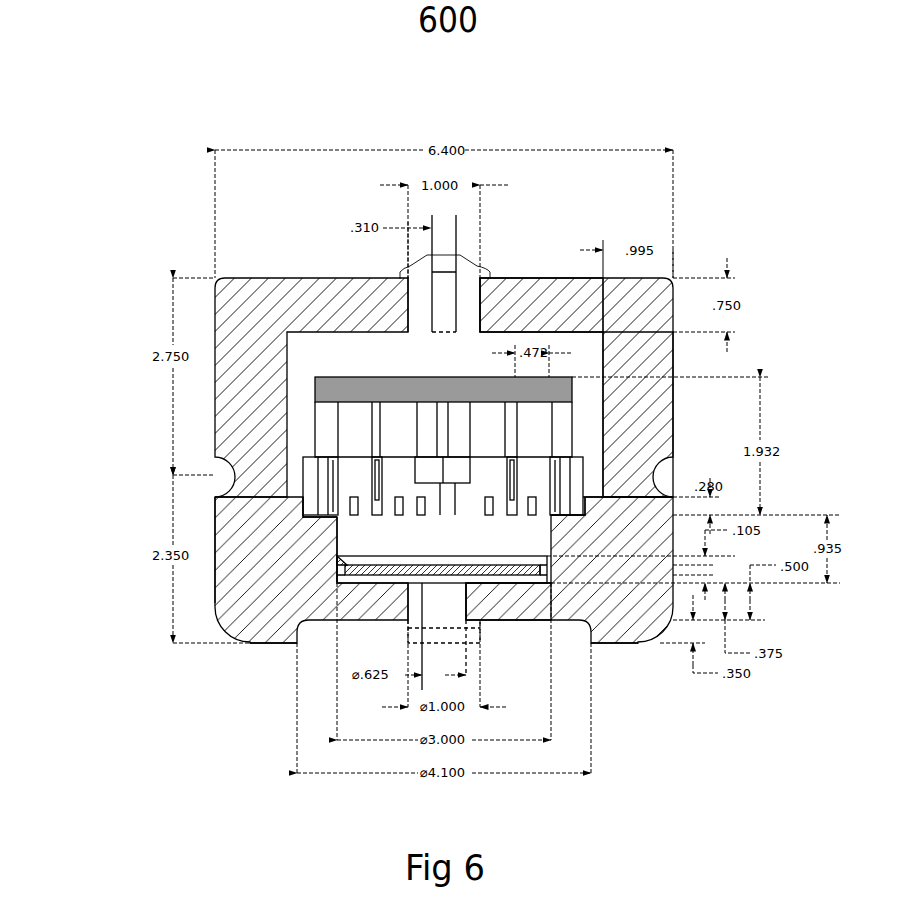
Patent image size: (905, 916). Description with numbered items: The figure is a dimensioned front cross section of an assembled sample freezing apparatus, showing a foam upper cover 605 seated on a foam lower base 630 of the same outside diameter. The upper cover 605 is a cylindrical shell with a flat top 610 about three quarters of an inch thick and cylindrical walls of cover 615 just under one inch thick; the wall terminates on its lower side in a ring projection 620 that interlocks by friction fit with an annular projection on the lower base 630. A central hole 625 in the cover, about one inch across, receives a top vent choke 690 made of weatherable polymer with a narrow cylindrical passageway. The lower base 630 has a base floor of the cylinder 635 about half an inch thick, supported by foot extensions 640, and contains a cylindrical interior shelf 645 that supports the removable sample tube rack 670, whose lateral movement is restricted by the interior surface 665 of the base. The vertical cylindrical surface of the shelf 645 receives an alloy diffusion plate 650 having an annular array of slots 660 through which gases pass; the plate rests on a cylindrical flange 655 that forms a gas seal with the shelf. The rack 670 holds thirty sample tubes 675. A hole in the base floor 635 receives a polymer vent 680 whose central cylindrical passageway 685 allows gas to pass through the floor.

The upper cover 605 is at (645, 308).
The flat top 610 is at (528, 305).
The cylindrical walls of cover 615 is at (655, 393).
The ring projection 620 is at (618, 485).
The central hole 625 is at (405, 306).
The lower base 630 is at (638, 598).
The base floor of the cylinder 635 is at (528, 600).
The foot extensions 640 is at (273, 637).
The cylindrical interior shelf 645 is at (313, 542).
The alloy diffusion plate 650 is at (348, 573).
The cylindrical flange 655 is at (337, 573).
The annular array of slots 660 is at (393, 573).
The interior surface 665 is at (300, 508).
The removable sample tube rack 670 is at (316, 473).
The sample tubes 675 is at (528, 428).
The polymer vent 680 is at (475, 637).
The central cylindrical passageway 685 is at (438, 610).
The top vent choke 690 is at (416, 285).